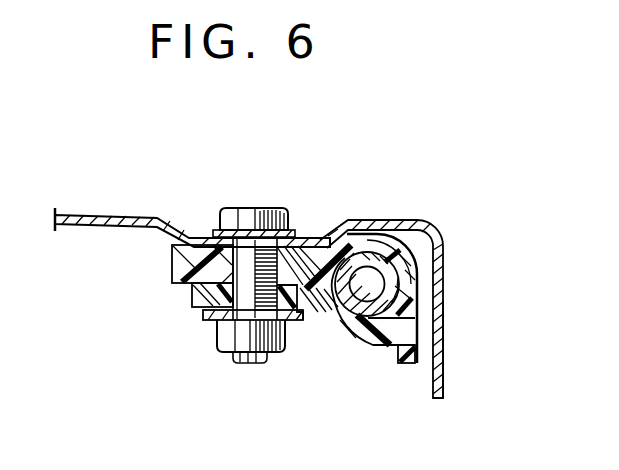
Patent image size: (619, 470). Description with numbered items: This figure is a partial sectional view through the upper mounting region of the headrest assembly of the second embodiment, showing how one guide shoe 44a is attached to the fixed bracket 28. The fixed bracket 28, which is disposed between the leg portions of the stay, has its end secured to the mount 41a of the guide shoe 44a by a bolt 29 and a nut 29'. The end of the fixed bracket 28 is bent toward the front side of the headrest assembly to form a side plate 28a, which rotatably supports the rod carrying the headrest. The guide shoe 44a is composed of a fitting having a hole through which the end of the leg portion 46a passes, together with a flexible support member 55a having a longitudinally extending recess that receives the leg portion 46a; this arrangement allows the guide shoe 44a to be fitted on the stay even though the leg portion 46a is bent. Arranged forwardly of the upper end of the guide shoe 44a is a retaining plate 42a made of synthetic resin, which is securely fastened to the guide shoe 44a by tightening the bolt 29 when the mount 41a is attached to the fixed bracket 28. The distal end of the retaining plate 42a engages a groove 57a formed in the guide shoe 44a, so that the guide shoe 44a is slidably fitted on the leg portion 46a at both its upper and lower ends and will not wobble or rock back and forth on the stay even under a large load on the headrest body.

The fixed bracket 28 is at (376, 221).
The side plate 28a is at (443, 323).
The bolt 29 is at (254, 243).
The nut 29' is at (222, 344).
The mount 41a is at (307, 250).
The retaining plate 42a is at (371, 340).
The guide shoe 44a is at (168, 264).
The leg portion 46a is at (374, 258).
The flexible support member 55a is at (413, 312).
The groove 57a is at (417, 350).